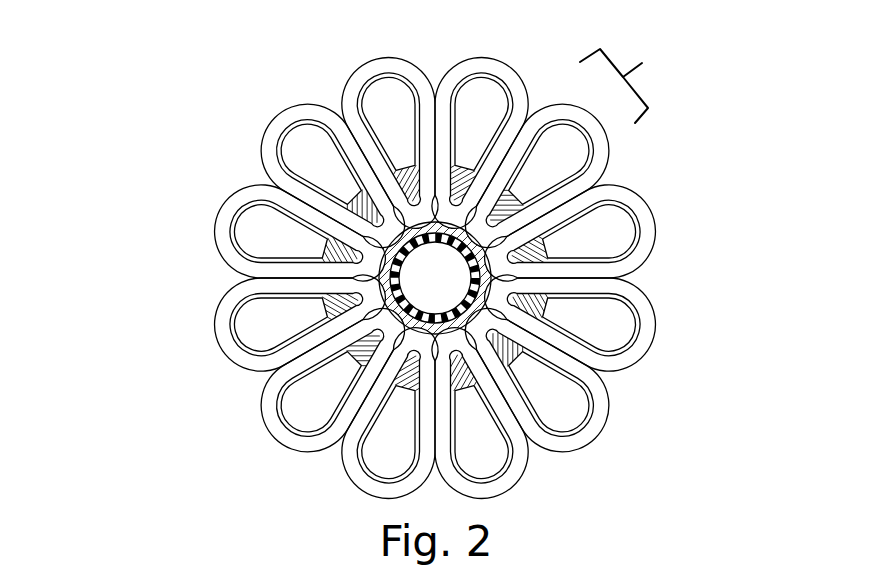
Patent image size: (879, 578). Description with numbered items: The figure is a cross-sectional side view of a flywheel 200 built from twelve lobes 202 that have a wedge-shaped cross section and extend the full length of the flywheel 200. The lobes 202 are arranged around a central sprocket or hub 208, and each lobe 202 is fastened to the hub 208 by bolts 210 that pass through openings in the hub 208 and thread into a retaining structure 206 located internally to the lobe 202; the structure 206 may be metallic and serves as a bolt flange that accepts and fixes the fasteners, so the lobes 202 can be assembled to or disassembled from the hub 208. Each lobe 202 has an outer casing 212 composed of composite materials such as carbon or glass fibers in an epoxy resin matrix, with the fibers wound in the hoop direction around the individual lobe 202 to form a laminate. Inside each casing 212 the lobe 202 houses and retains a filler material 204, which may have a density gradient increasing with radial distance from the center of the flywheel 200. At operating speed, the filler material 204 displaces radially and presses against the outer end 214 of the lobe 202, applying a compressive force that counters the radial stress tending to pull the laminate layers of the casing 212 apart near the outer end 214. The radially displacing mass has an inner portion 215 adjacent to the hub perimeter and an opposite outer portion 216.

The flywheel 200 is at (399, 302).
The lobes 202 is at (399, 305).
The filler material 204 is at (255, 325).
The retaining structure 206 is at (540, 240).
The hub 208 is at (423, 203).
The bolts 210 is at (481, 282).
The outer casing 212 is at (510, 472).
The outer end 214 is at (648, 60).
The inner portion 215 is at (405, 378).
The outer portion 216 is at (302, 440).